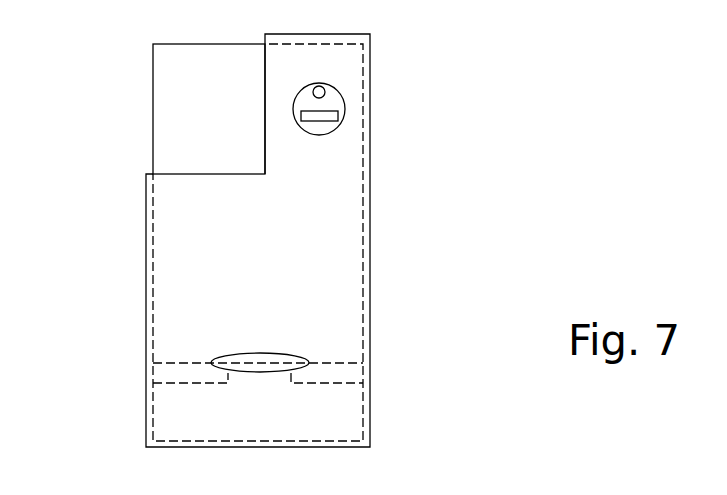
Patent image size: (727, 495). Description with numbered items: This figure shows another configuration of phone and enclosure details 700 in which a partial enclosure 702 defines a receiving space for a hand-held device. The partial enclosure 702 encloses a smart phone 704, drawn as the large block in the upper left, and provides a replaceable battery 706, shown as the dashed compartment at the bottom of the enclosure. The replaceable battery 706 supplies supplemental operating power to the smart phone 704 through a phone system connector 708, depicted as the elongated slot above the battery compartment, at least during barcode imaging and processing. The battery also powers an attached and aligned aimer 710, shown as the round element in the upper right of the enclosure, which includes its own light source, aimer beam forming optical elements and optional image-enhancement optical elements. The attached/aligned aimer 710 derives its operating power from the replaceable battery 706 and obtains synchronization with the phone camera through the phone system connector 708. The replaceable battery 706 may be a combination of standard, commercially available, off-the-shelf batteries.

The phone and enclosure details 700 is at (151, 31).
The partial enclosure 702 is at (371, 152).
The smart phone 704 is at (204, 116).
The replaceable battery 706 is at (364, 398).
The phone system connector 708 is at (234, 355).
The attached/aligned aimer 710 is at (344, 101).